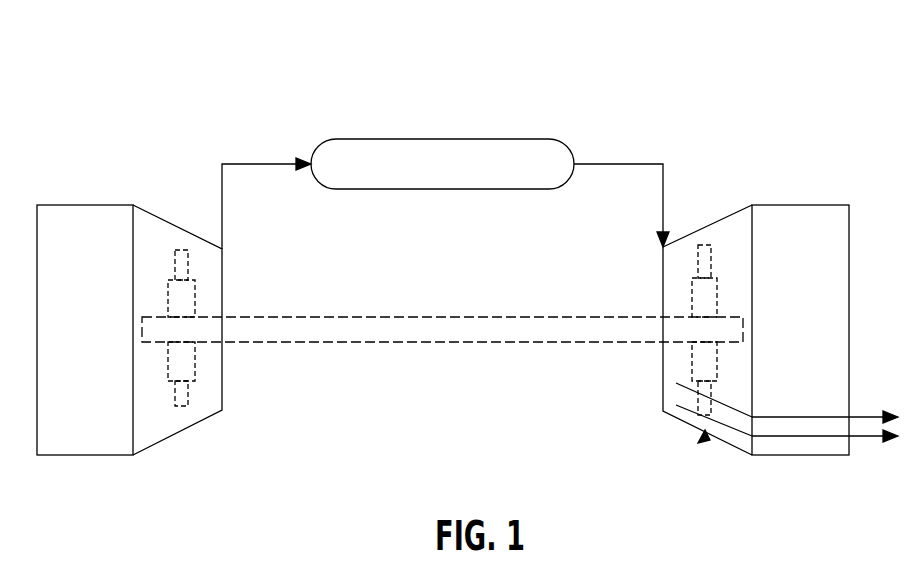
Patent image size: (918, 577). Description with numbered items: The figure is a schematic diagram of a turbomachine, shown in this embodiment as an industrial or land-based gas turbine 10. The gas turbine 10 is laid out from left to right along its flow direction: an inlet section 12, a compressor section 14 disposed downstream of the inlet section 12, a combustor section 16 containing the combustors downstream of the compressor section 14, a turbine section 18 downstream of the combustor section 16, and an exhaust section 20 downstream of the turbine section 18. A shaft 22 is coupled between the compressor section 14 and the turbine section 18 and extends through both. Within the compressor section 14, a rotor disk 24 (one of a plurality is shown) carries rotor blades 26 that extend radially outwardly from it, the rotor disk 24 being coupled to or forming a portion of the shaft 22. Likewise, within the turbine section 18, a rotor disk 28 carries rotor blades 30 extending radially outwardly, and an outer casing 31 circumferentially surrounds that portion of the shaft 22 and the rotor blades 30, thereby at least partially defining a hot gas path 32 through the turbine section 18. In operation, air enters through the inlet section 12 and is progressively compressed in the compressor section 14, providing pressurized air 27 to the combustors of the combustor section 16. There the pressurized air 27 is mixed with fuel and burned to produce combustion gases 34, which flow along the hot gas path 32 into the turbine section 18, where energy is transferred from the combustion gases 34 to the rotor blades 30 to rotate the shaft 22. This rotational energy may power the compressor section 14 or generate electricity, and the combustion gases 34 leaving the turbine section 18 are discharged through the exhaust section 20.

The gas turbine 10 is at (266, 86).
The inlet section 12 is at (65, 205).
The compressor section 14 is at (178, 228).
The combustor section 16 is at (513, 139).
The turbine section 18 is at (737, 212).
The exhaust section 20 is at (812, 205).
The shaft 22 is at (445, 343).
The rotor disk 24 is at (168, 299).
The rotor blade 26 is at (175, 270).
The pressurized air 27 is at (256, 165).
The rotor disk 28 is at (690, 298).
The rotor blade 30 is at (705, 245).
The outer casing 31 is at (740, 452).
The hot gas path 32 is at (705, 439).
The combustion gases 34 is at (628, 165).